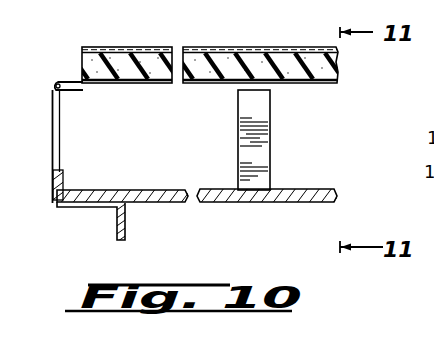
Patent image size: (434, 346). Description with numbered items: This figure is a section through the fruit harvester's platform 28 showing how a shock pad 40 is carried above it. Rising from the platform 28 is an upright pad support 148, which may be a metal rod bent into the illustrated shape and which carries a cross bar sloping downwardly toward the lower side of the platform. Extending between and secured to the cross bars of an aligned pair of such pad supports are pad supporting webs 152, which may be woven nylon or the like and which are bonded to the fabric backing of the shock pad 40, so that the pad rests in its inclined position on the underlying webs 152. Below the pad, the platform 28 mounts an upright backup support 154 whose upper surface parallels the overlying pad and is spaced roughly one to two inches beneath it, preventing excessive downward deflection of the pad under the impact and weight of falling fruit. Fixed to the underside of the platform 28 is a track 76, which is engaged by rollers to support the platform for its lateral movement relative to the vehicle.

The shock pad 40 is at (293, 27).
The pad supporting web 152 is at (68, 80).
The upright pad support 148 is at (60, 138).
The platform 28 is at (170, 203).
The track 76 is at (117, 230).
The backup support 154 is at (270, 157).